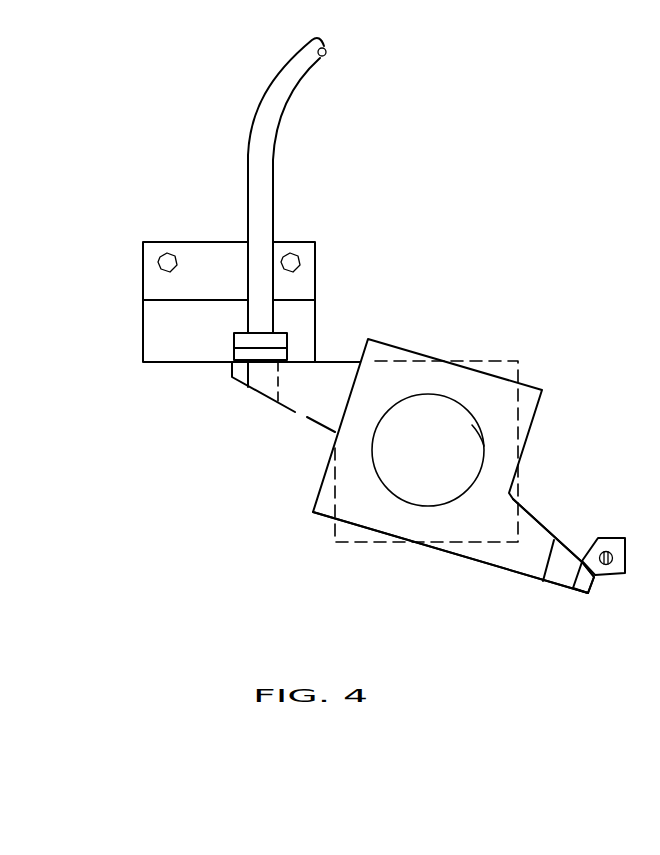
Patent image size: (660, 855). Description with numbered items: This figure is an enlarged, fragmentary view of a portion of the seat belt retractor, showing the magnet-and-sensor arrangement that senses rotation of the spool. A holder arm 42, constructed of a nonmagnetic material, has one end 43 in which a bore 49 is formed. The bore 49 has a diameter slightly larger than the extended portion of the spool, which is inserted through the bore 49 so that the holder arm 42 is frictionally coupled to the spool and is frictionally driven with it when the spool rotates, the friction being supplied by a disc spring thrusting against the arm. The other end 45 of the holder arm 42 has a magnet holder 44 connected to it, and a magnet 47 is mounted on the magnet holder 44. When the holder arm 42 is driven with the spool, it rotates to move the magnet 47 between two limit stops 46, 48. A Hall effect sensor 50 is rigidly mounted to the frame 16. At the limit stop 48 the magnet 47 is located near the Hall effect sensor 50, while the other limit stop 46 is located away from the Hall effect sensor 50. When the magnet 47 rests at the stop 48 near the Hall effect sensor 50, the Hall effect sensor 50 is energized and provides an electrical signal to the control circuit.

The frame 16 is at (208, 253).
The holder arm 42 is at (314, 518).
The one end of the holder arm 43 is at (437, 382).
The magnet holder 44 is at (568, 550).
The other end of the holder arm 45 is at (535, 557).
The limit stop 46 is at (613, 540).
The magnet 47 is at (560, 577).
The limit stop 48 is at (232, 365).
The bore 49 is at (484, 446).
The Hall effect sensor 50 is at (268, 345).